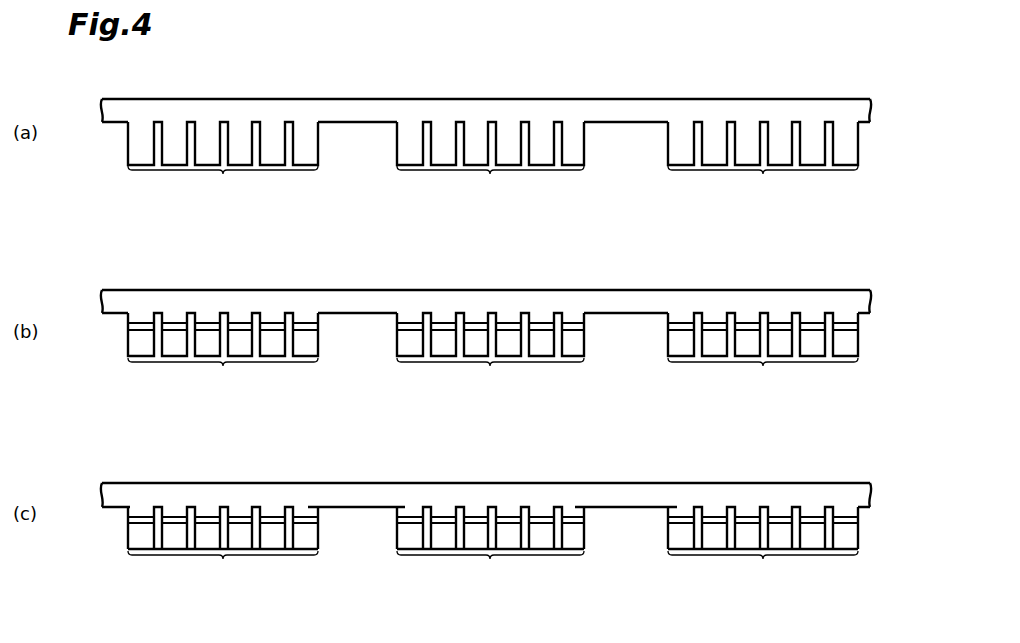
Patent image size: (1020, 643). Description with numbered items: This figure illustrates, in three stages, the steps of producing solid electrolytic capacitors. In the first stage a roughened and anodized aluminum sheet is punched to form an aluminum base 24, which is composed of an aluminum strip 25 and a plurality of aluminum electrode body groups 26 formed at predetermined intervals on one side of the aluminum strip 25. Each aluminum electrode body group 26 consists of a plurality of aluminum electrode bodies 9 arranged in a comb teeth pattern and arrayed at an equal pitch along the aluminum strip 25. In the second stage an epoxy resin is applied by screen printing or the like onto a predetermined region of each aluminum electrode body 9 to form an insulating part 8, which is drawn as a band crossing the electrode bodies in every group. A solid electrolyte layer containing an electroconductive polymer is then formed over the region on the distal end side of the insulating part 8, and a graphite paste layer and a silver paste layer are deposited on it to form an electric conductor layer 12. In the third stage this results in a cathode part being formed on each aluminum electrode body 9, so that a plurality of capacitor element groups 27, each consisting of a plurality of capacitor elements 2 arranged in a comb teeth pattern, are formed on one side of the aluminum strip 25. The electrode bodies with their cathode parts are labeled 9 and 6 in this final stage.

The aluminum base 24 is at (592, 82).
The aluminum strip 25 is at (648, 105).
The aluminum electrode body 9 is at (128, 148).
The aluminum electrode body group 26 is at (493, 276).
The insulating part 8 is at (208, 325).
The capacitor element group 27 is at (493, 567).
The capacitor element 2 is at (322, 540).
The electric conductor layer 12 is at (132, 538).
The side wall 6 is at (493, 528).